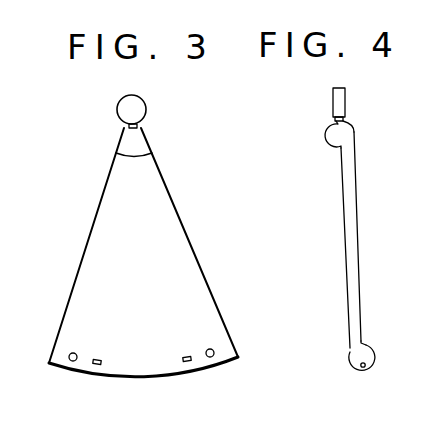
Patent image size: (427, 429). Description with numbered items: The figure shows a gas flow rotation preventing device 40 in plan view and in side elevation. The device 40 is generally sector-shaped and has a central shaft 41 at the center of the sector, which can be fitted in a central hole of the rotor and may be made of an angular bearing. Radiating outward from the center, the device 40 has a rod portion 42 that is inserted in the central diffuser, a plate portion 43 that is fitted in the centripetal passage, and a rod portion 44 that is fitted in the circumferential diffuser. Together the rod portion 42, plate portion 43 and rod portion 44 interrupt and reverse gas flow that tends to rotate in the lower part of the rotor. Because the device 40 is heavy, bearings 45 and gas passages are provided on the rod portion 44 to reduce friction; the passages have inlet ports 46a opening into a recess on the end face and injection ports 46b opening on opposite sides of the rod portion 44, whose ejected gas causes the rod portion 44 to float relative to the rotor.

In FIG. 3, the gas flow rotation preventing device 40 is at (192, 100).
In FIG. 4, the gas flow rotation preventing device 40 is at (392, 95).
In FIG. 3, the central shaft 41 is at (128, 105).
In FIG. 4, the central shaft 41 is at (333, 92).
In FIG. 3, the rod portion 42 is at (142, 143).
In FIG. 4, the rod portion 42 is at (328, 132).
In FIG. 3, the plate portion 43 is at (178, 245).
In FIG. 4, the plate portion 43 is at (345, 227).
In FIG. 3, the rod portion 44 is at (235, 350).
In FIG. 4, the rod portion 44 is at (352, 358).
In FIG. 3, the bearings 45 is at (99, 366).
In FIG. 4, the inlet ports 46a is at (363, 368).
In FIG. 3, the injection ports 46b is at (70, 362).